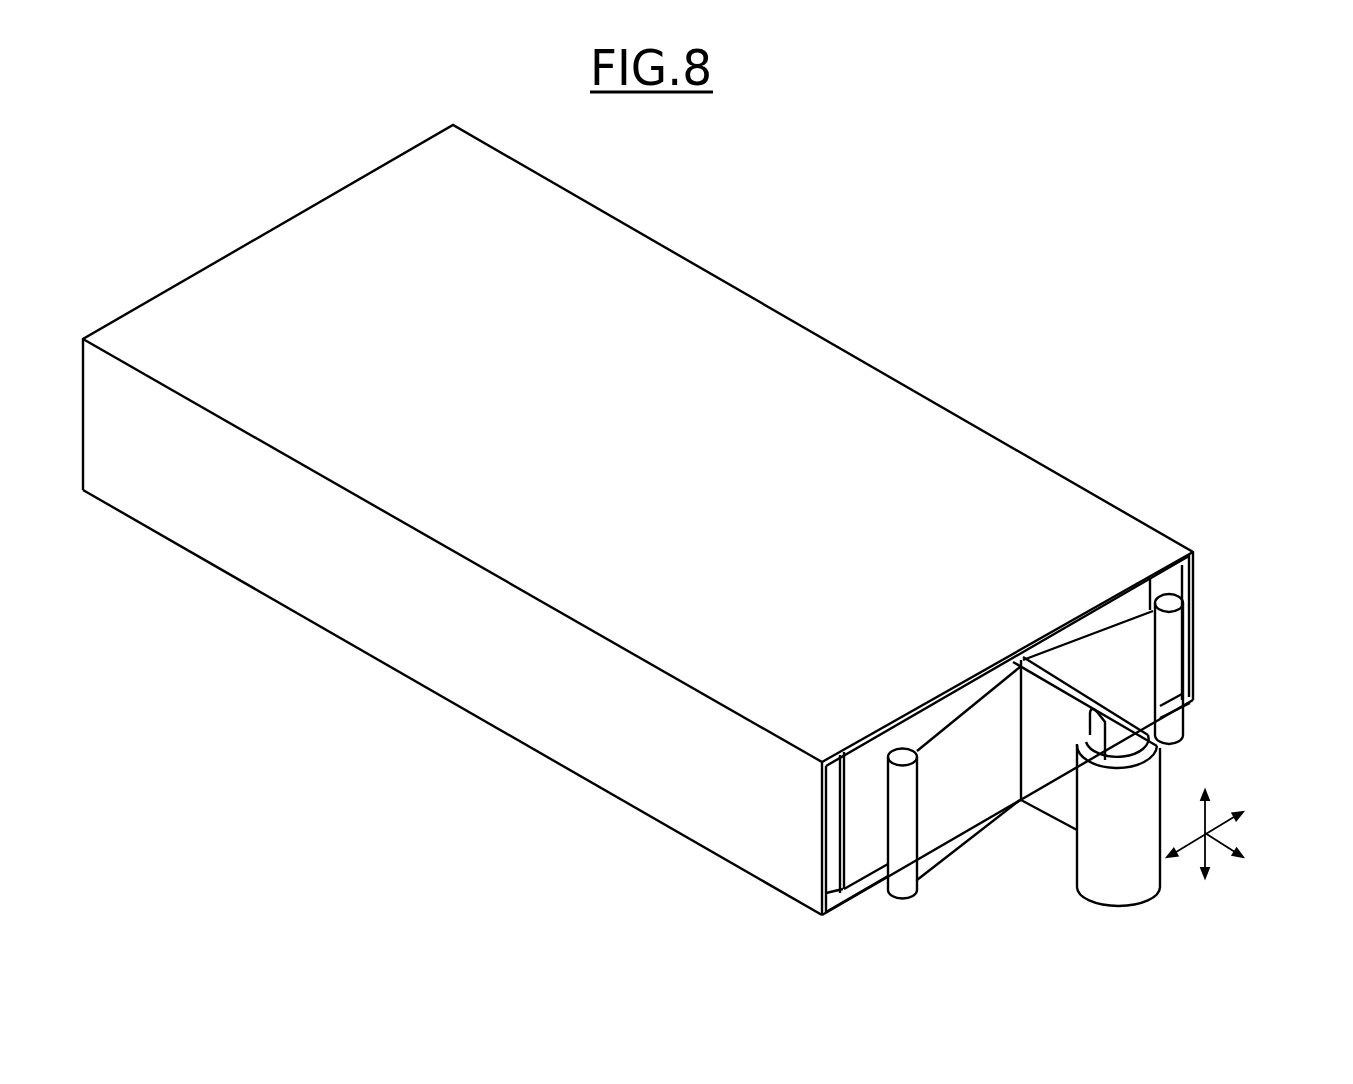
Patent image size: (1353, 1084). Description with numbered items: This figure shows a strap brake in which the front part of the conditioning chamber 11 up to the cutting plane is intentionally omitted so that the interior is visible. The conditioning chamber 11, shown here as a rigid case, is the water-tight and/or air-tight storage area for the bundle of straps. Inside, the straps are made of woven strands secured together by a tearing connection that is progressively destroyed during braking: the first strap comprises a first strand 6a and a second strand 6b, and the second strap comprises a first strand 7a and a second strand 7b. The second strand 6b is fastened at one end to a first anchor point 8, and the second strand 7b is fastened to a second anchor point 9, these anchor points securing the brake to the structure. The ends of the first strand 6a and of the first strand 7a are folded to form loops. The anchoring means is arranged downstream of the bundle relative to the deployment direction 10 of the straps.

The conditioning chamber 11 is at (744, 303).
The first strand of the second strap 7a is at (1056, 808).
The second strand of the second strap 7b is at (966, 838).
The second anchor point 9 is at (901, 898).
The first anchor point 8 is at (1188, 663).
The first strand of the first strap 6a is at (1171, 765).
The second strand of the first strap 6b is at (1132, 685).
The deployment direction 10 is at (1261, 826).